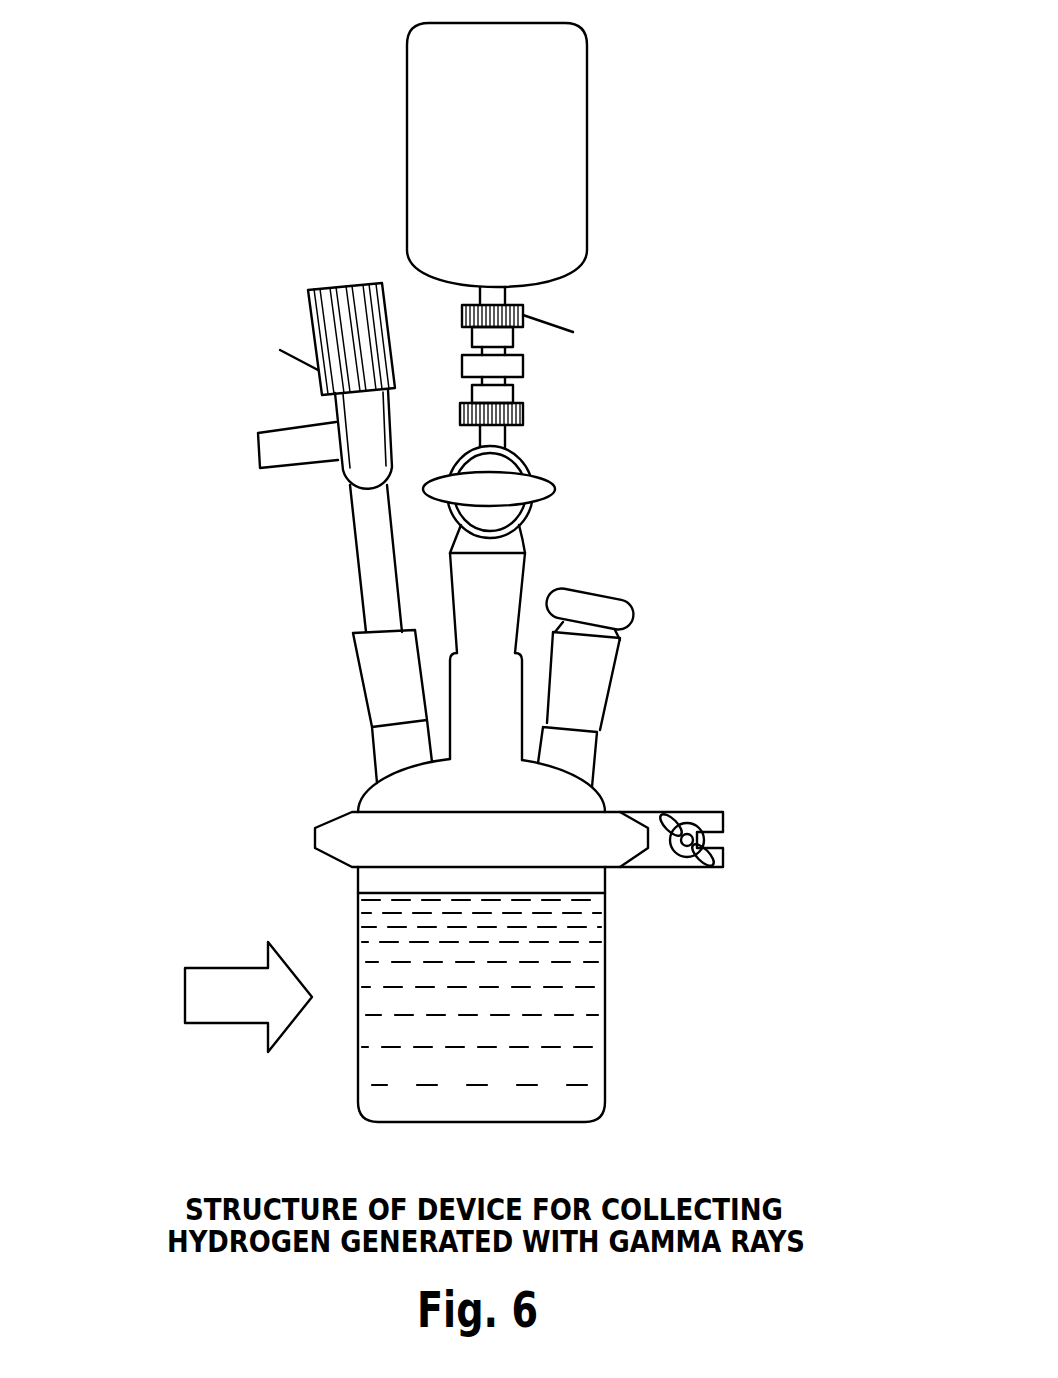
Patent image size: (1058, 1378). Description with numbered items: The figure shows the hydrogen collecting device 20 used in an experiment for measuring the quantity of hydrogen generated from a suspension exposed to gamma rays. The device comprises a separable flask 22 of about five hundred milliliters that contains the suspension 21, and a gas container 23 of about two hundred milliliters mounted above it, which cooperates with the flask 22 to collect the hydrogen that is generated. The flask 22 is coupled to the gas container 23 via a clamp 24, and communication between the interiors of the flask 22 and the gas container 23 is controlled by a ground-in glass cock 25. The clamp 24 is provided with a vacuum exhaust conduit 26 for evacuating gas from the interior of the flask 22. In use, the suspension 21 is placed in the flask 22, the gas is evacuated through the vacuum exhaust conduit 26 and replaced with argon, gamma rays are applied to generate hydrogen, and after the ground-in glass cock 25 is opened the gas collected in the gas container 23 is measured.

The hydrogen collecting device 20 is at (690, 606).
The suspension 21 is at (560, 972).
The separable flask 22 is at (358, 917).
The gas container 23 is at (407, 160).
The clamp 24 is at (628, 812).
The ground-in glass cock 25 is at (520, 458).
The vacuum exhaust conduit 26 is at (357, 558).